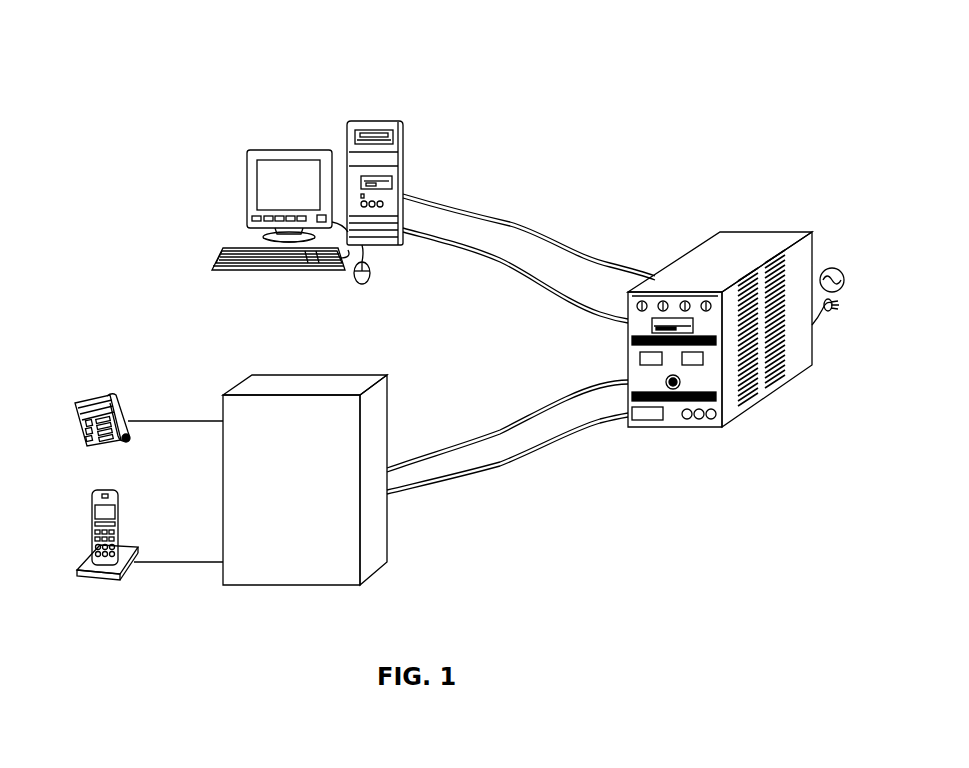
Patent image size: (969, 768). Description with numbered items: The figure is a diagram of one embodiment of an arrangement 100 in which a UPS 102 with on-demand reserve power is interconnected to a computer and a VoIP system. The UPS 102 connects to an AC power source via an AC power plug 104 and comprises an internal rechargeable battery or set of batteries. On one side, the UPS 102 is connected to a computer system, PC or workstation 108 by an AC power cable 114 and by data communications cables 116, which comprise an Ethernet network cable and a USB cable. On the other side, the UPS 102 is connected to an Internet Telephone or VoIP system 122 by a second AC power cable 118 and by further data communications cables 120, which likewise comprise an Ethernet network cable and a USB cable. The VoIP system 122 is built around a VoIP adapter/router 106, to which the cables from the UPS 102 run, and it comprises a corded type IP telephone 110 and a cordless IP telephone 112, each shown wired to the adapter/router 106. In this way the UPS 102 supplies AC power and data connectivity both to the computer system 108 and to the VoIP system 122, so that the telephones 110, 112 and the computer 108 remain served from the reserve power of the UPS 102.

The communication system 100 is at (146, 52).
The UPS 102 is at (688, 428).
The AC power plug 104 is at (836, 312).
The VoIP system 106 is at (370, 566).
The computer system 108 is at (416, 139).
The corded type IP telephone 110 is at (92, 403).
The cordless IP telephone 112 is at (98, 582).
The AC power cable 114 is at (549, 234).
The data communications cables 116 is at (526, 283).
The AC power cable 118 is at (522, 420).
The data communications cables 120 is at (517, 459).
The VoIP system 122 is at (216, 345).